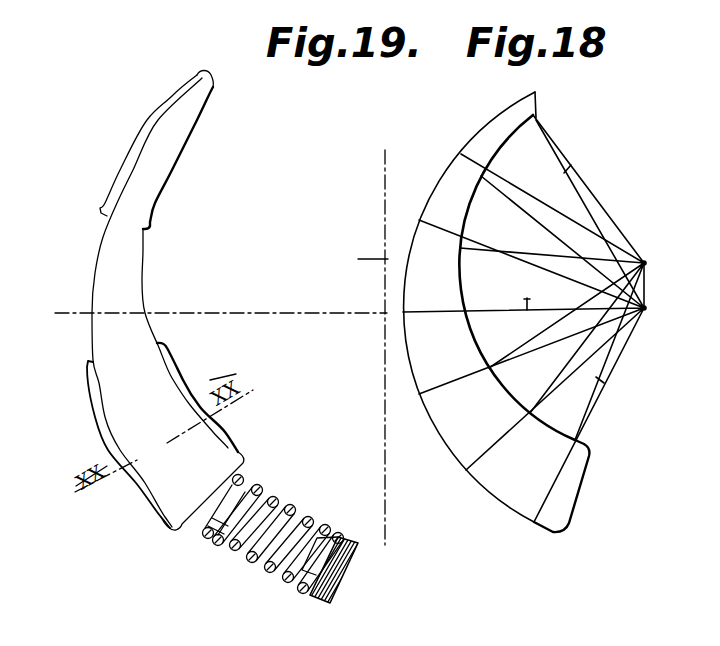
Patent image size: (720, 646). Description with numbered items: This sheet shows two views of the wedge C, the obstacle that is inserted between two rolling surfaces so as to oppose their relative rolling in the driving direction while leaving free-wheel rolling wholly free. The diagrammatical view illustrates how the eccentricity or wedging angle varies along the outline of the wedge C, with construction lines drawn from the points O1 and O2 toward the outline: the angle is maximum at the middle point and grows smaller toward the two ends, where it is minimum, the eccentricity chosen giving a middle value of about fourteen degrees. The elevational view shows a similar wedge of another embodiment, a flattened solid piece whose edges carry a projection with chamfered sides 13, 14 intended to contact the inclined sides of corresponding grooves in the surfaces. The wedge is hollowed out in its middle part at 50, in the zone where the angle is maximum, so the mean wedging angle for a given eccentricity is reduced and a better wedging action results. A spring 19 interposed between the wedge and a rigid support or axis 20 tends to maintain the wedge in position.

In FIG. 19, the hollowed-out middle part 50 is at (145, 246).
In FIG. 19, the chamfered side 13 is at (228, 431).
In FIG. 19, the chamfered side 14 is at (178, 158).
In FIG. 19, the spring 19 is at (290, 507).
In FIG. 19, the support or axis 20 is at (358, 543).
In FIG. 18, the wedge C is at (577, 490).
In FIG. 18, the center of outer arc O1 is at (532, 321).
In FIG. 18, the center of inner arc O2 is at (564, 277).